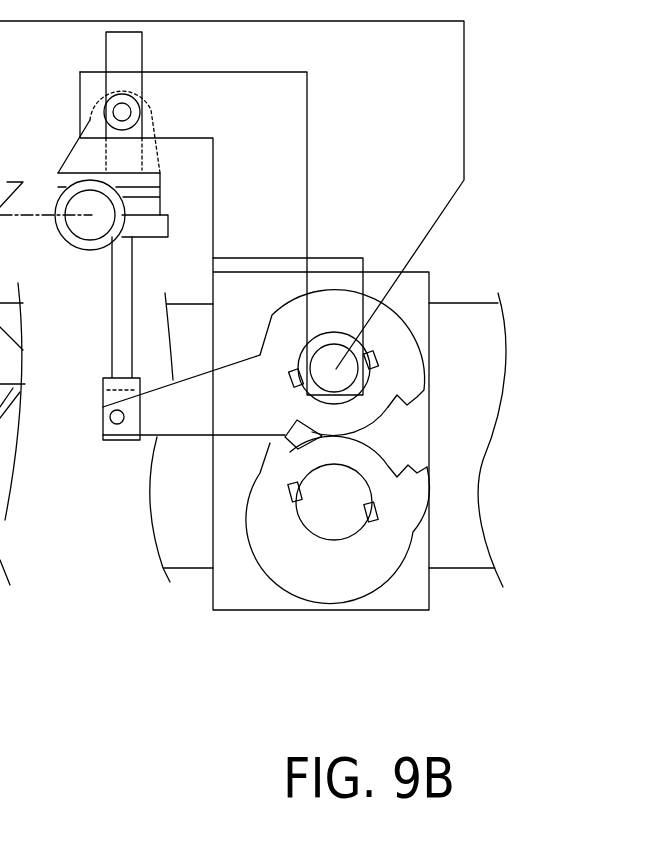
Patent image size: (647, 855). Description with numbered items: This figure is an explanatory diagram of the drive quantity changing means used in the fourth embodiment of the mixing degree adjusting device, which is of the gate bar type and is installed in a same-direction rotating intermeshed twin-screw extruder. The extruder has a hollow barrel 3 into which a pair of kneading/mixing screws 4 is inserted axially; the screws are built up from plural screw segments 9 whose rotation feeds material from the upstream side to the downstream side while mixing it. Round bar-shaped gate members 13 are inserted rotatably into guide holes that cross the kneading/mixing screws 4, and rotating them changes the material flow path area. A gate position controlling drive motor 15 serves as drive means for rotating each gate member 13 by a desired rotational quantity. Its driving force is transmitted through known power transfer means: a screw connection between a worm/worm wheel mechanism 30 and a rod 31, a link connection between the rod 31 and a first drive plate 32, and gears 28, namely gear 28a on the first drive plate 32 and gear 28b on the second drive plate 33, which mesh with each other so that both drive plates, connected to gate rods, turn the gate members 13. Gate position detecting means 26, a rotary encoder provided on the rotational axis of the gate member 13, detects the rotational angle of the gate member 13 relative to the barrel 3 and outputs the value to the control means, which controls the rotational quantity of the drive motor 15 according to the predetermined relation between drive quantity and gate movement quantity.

The barrel 3 is at (183, 575).
The kneading/mixing screw 4 is at (0, 423).
The screw segment 9 is at (0, 455).
The gate member 13 is at (307, 537).
The gate position controlling drive motor 15 is at (80, 255).
The gate position detecting means 26 is at (372, 386).
The gears 28 is at (463, 468).
The gear 28a is at (373, 423).
The gear 28b is at (380, 450).
The worm/worm wheel mechanism 30 is at (164, 210).
The rod 31 is at (112, 347).
The first drive plate 32 is at (362, 335).
The second drive plate 33 is at (378, 577).